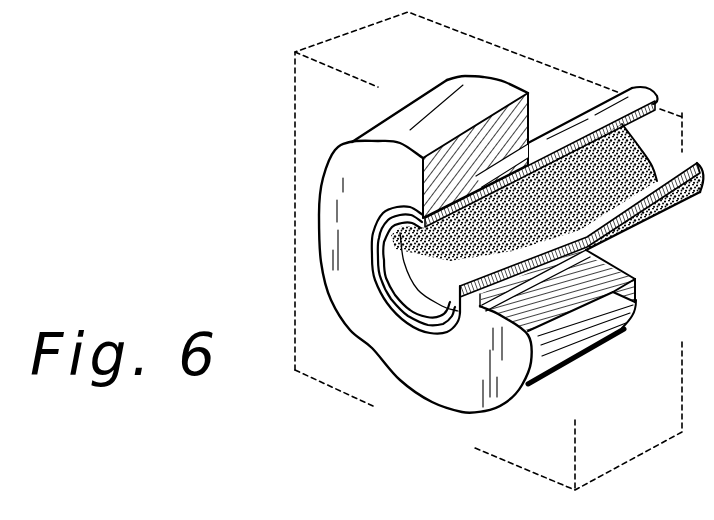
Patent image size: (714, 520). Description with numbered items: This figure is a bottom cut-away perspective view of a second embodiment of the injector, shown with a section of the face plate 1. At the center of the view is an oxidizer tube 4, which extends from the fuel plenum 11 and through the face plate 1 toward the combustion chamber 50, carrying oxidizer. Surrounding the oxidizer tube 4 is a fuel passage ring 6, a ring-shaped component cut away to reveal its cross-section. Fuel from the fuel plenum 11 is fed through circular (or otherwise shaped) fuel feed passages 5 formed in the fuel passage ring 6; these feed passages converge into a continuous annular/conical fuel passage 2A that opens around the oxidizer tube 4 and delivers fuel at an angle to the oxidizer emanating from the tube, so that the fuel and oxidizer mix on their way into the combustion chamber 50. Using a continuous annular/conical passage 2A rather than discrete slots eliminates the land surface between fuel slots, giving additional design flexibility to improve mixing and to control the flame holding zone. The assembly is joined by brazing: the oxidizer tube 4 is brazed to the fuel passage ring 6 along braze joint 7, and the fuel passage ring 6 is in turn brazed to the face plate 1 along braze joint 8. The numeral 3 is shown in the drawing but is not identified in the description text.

The face plate 1 is at (488, 251).
The continuous annular/conical fuel passage 2A is at (463, 337).
The core 3 is at (669, 152).
The oxidizer tube 4 is at (590, 111).
The fuel feed passage 5 is at (636, 294).
The fuel passage ring 6 is at (424, 253).
The braze joint 7 is at (474, 120).
The braze joint 8 is at (408, 130).
The fuel plenum 11 is at (670, 274).
The combustion chamber 50 is at (342, 489).